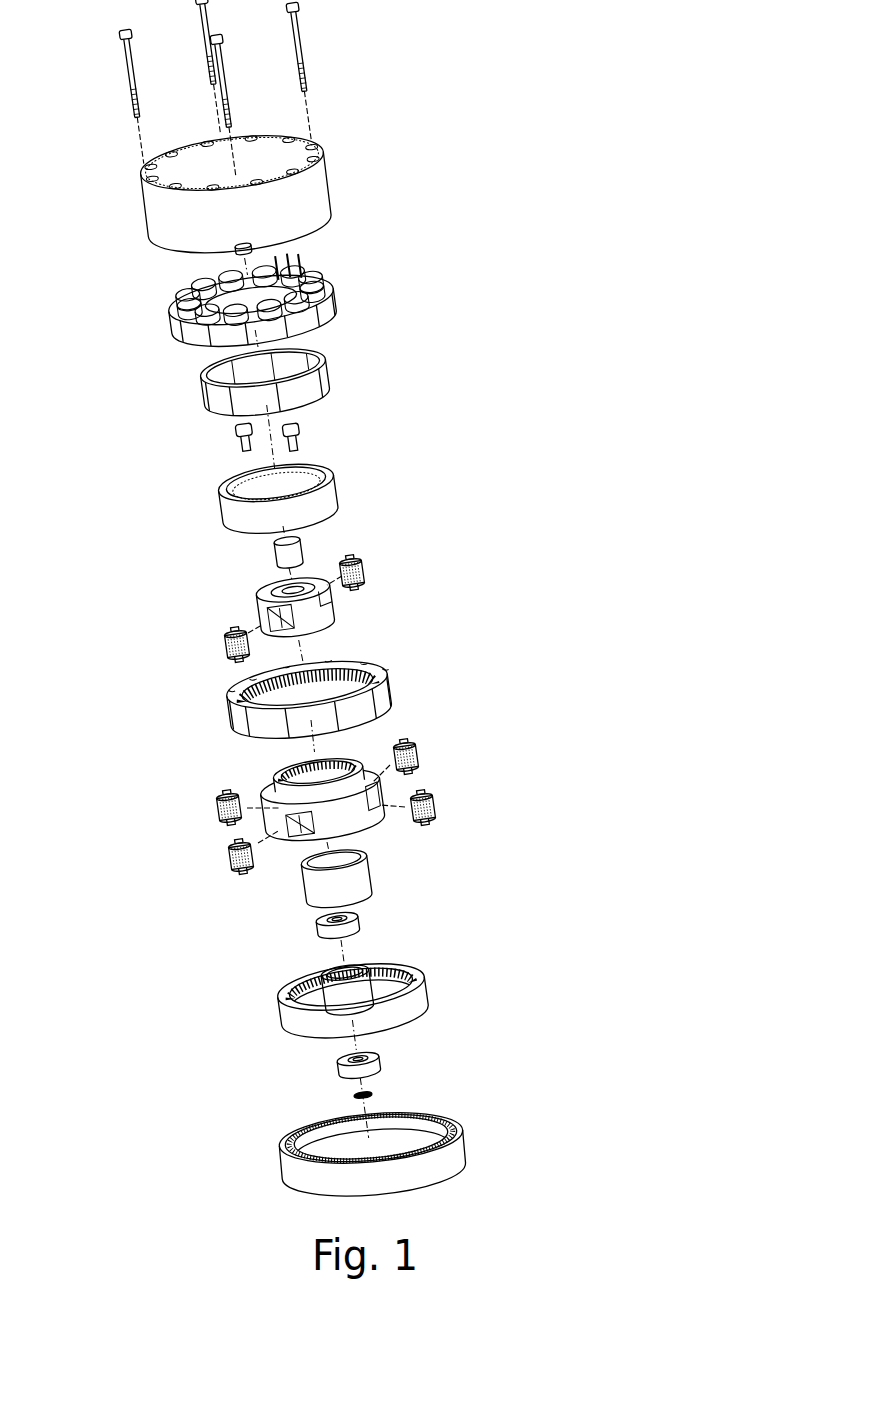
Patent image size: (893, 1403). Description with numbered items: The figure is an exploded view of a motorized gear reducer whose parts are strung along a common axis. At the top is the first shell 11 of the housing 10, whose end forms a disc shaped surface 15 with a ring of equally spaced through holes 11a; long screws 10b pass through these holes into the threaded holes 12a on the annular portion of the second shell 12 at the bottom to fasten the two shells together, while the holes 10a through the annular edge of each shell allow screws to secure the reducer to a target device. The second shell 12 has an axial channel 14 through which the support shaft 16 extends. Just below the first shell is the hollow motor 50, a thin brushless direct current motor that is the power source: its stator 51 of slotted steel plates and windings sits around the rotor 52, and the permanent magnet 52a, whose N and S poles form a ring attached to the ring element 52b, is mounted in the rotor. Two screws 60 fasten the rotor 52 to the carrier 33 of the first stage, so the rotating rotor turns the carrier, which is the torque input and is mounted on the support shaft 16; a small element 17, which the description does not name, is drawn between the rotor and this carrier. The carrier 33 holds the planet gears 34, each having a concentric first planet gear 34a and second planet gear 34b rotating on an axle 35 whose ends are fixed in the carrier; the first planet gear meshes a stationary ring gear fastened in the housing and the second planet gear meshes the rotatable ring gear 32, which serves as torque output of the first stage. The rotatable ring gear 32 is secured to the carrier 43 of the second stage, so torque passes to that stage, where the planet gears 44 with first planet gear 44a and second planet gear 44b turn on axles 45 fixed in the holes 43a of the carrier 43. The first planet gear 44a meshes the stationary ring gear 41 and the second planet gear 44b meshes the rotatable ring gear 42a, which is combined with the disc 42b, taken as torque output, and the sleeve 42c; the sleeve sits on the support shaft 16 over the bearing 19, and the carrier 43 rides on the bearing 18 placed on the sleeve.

The housing 10 is at (148, 253).
The holes 10a is at (157, 163).
The screws 10b is at (300, 36).
The first shell 11 is at (160, 210).
The through holes 11a is at (318, 136).
The second shell 12 is at (437, 1160).
The threaded holes 12a is at (448, 1115).
The axial channel 14 is at (343, 1133).
The disc shaped surface 15 is at (273, 157).
The support shaft 16 is at (253, 245).
The shaft 17 is at (280, 558).
The bearing 18 is at (353, 883).
The bearing 19 is at (352, 933).
The rotatable ring gear 32 is at (310, 762).
The carrier 33 is at (330, 620).
The planet gears 34 is at (173, 639).
The first planet gear 34a is at (227, 645).
The second planet gear 34b is at (227, 647).
The axle 35 is at (211, 603).
The stationary ring gear 41 is at (392, 700).
The rotatable ring gear 42a is at (310, 978).
The disc 42b is at (317, 1000).
The sleeve 42c is at (367, 987).
The carrier 43 is at (349, 811).
The holes 43a is at (390, 772).
The planet gears 44 is at (187, 876).
The first planet gear 44a is at (223, 862).
The second planet gear 44b is at (223, 870).
The axle 45 is at (211, 829).
The hollow motor 50 is at (355, 394).
The stator 51 is at (333, 298).
The rotor 52 is at (334, 440).
The permanent magnet 52a is at (320, 377).
The ring element 52b is at (373, 450).
The screws 60 is at (300, 442).